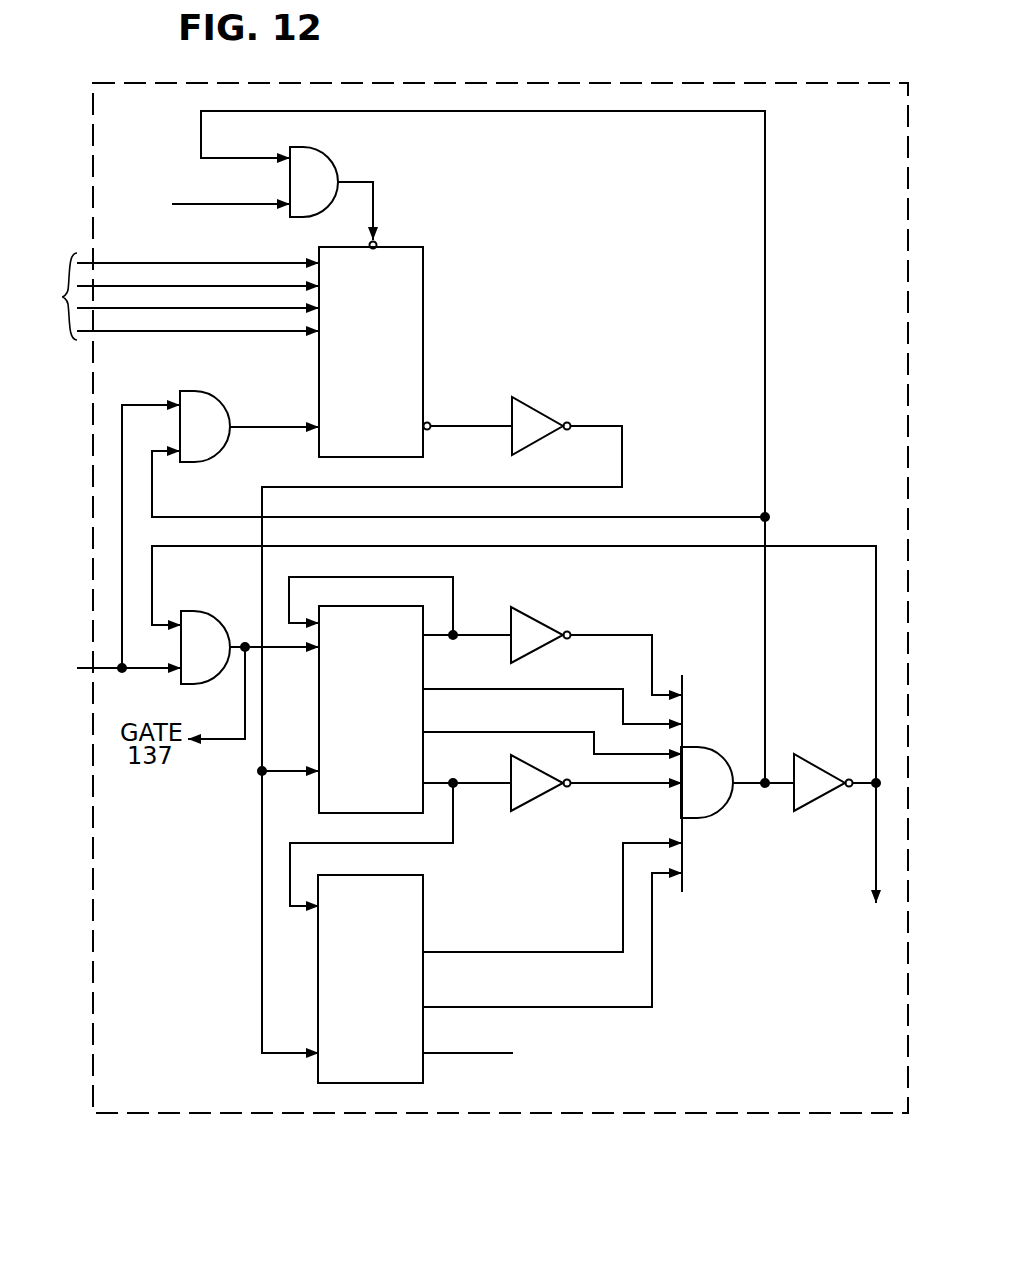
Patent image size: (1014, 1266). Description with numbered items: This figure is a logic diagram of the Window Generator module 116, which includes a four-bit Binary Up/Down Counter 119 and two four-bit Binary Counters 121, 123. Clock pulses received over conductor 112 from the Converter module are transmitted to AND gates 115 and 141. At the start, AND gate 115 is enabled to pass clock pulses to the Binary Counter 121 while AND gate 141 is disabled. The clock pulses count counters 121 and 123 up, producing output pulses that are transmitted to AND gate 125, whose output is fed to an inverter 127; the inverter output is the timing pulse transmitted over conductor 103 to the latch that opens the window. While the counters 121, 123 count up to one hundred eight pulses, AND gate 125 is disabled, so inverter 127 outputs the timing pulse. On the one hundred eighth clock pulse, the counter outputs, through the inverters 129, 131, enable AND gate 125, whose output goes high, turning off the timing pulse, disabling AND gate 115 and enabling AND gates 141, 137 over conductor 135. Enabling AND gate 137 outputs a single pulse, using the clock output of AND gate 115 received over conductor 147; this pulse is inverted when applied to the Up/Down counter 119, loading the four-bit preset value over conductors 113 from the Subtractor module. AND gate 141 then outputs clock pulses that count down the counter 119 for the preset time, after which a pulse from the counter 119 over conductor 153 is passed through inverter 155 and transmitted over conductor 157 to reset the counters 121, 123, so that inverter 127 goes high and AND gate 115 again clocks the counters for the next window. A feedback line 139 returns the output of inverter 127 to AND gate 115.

The Window Generator module 116 is at (535, 82).
The conductor 135 is at (540, 112).
The AND gate 137 is at (305, 154).
The conductor 147 is at (197, 205).
The conductors 113 is at (173, 296).
The Binary Up/Down Counter 119 is at (418, 290).
The AND gate 141 is at (198, 398).
The conductor 153 is at (448, 425).
The inverter 155 is at (530, 412).
The conductor 157 is at (622, 440).
The feedback line 139 is at (633, 547).
The AND gate 115 is at (196, 618).
The conductor 112 is at (102, 668).
The Binary Counter 121 is at (420, 660).
The inverter 129 is at (530, 618).
The inverter 131 is at (523, 768).
The AND gate 125 is at (710, 808).
The inverter 127 is at (805, 770).
The conductor 103 is at (876, 860).
The Binary Counter 123 is at (415, 917).